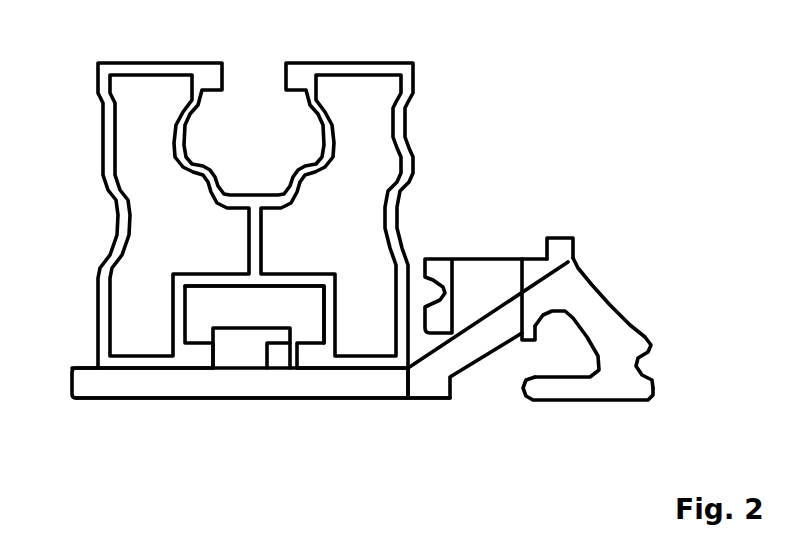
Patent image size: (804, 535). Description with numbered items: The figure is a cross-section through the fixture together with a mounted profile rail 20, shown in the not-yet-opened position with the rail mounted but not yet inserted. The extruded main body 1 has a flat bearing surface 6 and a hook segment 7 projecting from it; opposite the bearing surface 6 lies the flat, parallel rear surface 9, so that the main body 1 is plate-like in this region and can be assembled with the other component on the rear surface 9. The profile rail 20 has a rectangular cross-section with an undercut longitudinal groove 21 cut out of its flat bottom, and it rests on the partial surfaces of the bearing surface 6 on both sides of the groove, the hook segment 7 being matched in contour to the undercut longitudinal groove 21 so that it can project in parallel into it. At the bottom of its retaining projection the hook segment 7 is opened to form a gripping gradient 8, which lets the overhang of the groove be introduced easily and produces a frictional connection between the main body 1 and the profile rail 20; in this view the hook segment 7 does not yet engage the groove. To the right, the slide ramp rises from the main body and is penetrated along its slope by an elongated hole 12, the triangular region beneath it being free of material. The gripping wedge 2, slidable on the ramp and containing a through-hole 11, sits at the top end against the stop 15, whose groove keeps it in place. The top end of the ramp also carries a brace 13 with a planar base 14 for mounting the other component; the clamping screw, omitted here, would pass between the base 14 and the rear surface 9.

The main body 1 is at (63, 382).
The gripping wedge 2 is at (425, 258).
The bearing surface 6 is at (88, 367).
The hook segment 7 is at (240, 328).
The gripping gradient 8 is at (278, 352).
The rear surface 9 is at (233, 404).
The through-hole 11 is at (494, 296).
The elongated hole 12 is at (480, 361).
The brace 13 is at (614, 307).
The base 14 is at (592, 402).
The stop 15 is at (571, 238).
The profile rail 20 is at (98, 66).
The undercut longitudinal groove 21 is at (323, 318).